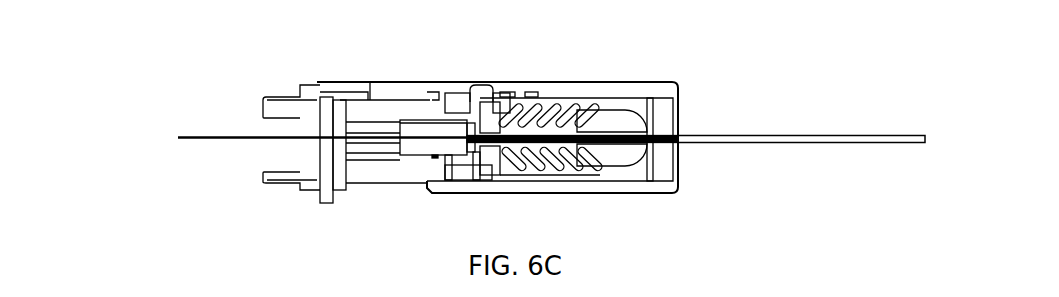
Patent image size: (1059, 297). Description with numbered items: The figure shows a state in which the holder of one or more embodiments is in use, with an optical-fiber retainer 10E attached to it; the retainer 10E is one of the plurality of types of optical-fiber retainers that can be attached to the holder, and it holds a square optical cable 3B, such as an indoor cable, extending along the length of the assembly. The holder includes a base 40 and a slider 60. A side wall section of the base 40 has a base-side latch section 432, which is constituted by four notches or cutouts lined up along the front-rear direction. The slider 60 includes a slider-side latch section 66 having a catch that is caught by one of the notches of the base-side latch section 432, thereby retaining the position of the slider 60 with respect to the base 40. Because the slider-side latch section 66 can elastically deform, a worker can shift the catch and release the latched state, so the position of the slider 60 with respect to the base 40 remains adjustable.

The optical-fiber retainer 10E is at (387, 178).
The base 40 is at (391, 84).
The base-side latch section 432 is at (437, 96).
The slider-side latch section 66 is at (507, 91).
The slider 60 is at (651, 113).
The square optical cable 3B is at (838, 134).